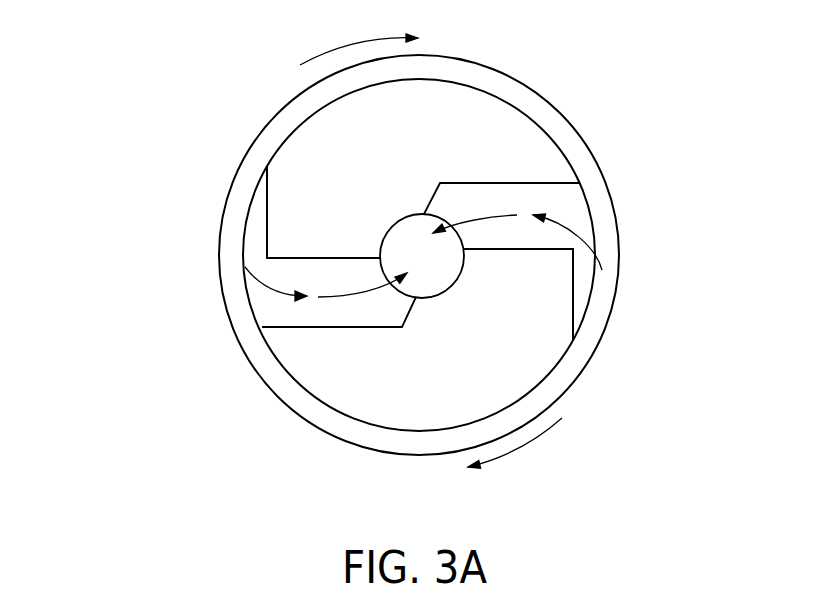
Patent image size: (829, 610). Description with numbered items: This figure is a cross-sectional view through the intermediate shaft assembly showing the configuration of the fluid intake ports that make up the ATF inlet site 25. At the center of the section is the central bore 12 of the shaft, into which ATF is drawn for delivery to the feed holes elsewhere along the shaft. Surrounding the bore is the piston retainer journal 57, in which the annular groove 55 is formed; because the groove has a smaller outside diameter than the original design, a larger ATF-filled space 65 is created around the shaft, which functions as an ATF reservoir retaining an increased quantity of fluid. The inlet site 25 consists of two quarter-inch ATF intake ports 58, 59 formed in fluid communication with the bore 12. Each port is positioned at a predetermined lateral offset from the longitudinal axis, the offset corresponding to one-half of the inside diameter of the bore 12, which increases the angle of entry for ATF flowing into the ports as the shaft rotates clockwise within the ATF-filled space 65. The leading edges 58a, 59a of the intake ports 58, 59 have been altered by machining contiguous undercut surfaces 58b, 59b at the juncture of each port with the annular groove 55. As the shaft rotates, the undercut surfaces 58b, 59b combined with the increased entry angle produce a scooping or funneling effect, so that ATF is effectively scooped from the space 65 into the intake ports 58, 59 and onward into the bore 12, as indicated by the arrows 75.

The central bore 12 is at (432, 272).
The ATF inlet site 25 is at (140, 275).
The annular groove 55 is at (495, 100).
The piston retainer journal 57 is at (287, 402).
The ATF intake port 58 is at (580, 204).
The leading edge 58a is at (568, 263).
The undercut surface 58b is at (573, 310).
The ATF intake port 59 is at (262, 315).
The leading edge 59a is at (267, 258).
The undercut surface 59b is at (267, 212).
The ATF-filled space 65 is at (270, 149).
The arrows 75 is at (470, 217).